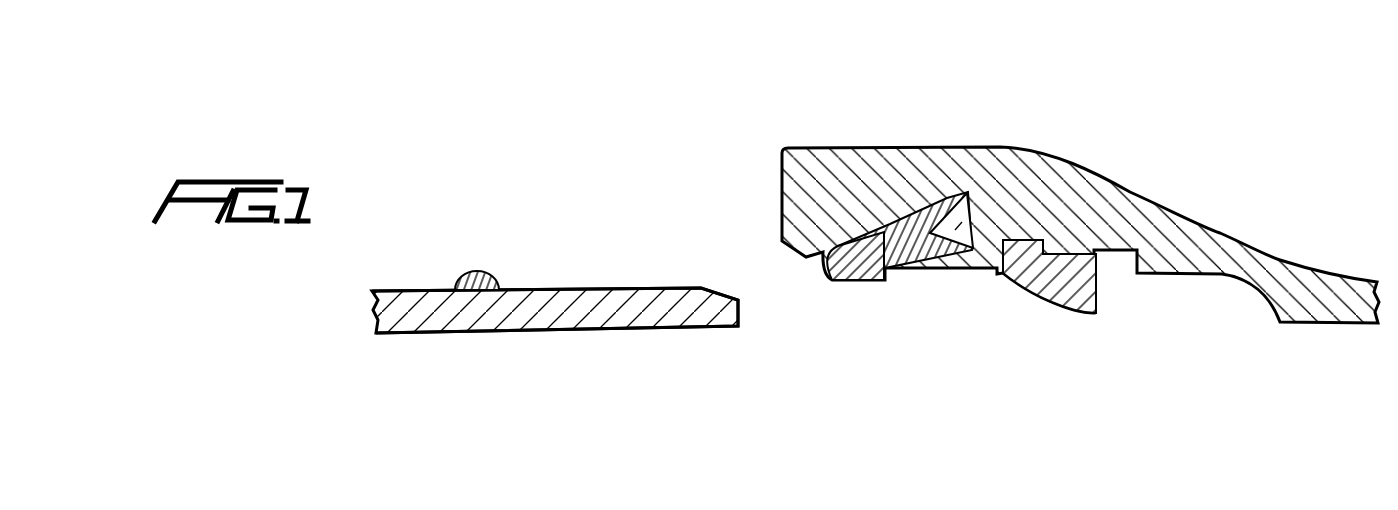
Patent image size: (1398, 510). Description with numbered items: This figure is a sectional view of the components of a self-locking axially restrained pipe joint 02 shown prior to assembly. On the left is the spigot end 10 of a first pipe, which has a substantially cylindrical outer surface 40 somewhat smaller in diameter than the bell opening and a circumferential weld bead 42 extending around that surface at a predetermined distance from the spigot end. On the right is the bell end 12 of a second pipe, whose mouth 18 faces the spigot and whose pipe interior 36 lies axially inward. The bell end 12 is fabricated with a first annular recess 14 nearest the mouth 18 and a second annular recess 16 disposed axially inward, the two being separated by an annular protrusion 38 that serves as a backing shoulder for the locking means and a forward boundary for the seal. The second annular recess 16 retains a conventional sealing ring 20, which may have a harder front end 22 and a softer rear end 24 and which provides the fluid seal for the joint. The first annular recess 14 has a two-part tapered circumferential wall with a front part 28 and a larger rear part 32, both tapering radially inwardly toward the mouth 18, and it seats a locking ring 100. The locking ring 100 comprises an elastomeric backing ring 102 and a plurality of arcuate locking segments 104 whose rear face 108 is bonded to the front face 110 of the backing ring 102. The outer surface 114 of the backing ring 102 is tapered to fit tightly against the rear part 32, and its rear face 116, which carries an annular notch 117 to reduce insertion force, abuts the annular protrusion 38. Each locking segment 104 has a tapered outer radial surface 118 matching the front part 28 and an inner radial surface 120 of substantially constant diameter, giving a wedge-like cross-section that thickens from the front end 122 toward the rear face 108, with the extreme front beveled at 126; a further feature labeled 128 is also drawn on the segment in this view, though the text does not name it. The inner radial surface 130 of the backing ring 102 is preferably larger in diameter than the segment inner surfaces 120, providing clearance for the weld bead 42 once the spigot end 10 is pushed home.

The spigot end 10 is at (378, 322).
The outer surface 40 is at (580, 288).
The weld bead 42 is at (488, 272).
The pipe joint 02 is at (656, 185).
The bell end 12 is at (868, 230).
The first annular recess 14 is at (877, 227).
The second annular recess 16 is at (1050, 248).
The mouth 18 is at (738, 386).
The sealing ring 20 is at (1073, 313).
The front end 22 is at (1020, 290).
The rear end 24 is at (1097, 285).
The front part 28 is at (840, 225).
The rear part 32 is at (935, 200).
The pipe interior 36 is at (1250, 367).
The annular protrusion 38 is at (993, 273).
The locking ring 100 is at (920, 290).
The backing ring 102 is at (967, 272).
The locking segments 104 is at (853, 280).
The rear face 108 is at (850, 228).
The front face 110 is at (893, 273).
The outer surface 114 is at (975, 195).
The rear face 116 is at (972, 270).
The annular notch 117 is at (995, 205).
The outer radial surface 118 is at (822, 276).
The inner radial surface 120 is at (840, 282).
The front end 122 is at (823, 245).
The bevel 126 is at (833, 282).
The seal bottom 128 is at (867, 273).
The inner radial surface 130 is at (927, 262).